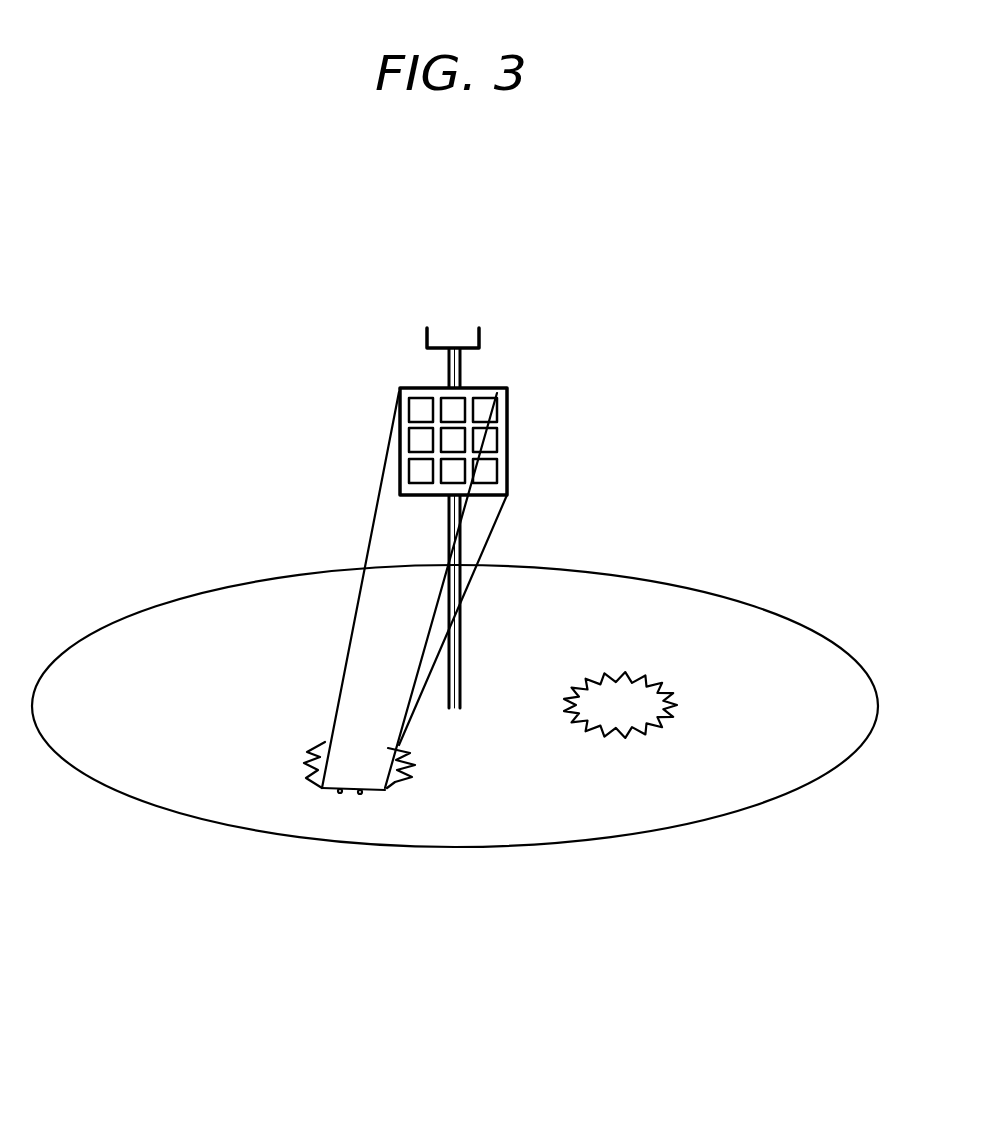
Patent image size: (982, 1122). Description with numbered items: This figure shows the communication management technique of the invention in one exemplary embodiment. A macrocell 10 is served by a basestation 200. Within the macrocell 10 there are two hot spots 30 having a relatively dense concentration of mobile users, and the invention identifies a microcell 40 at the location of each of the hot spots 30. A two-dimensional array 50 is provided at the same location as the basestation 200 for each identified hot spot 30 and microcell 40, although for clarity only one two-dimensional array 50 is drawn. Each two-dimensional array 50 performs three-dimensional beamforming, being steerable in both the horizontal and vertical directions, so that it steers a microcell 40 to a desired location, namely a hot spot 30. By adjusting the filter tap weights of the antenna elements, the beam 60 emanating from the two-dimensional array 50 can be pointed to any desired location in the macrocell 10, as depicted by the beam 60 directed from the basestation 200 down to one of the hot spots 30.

The basestation 200 is at (447, 347).
The two-dimensional array 50 is at (508, 445).
The beam 60 is at (370, 535).
The macrocell 10 is at (135, 753).
The hot spot 30 is at (587, 725).
The microcell 40 is at (380, 785).